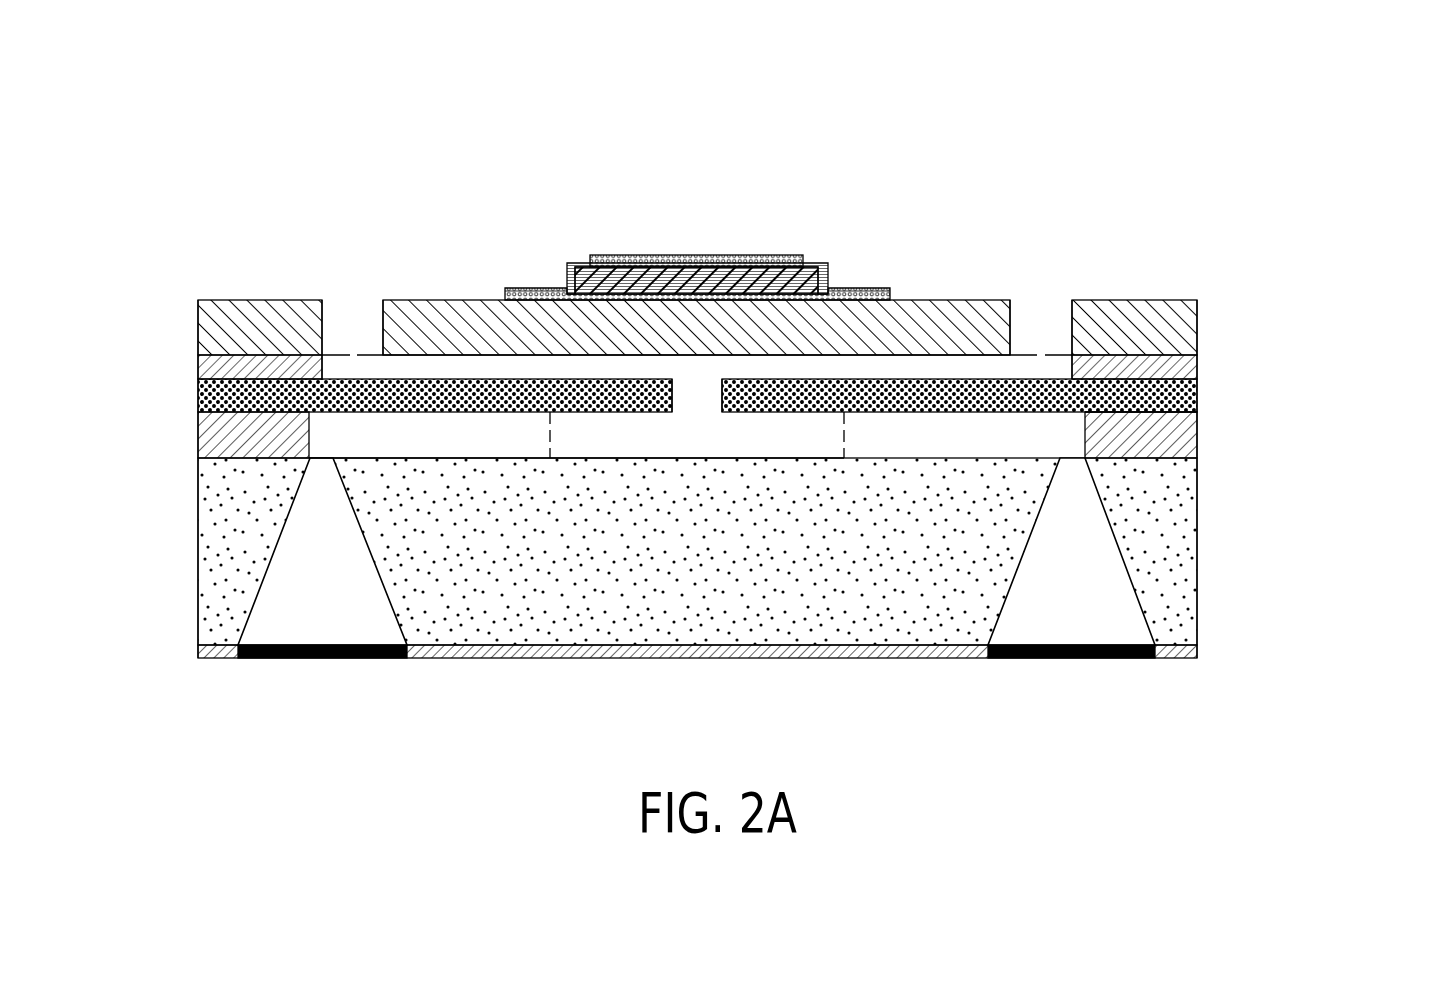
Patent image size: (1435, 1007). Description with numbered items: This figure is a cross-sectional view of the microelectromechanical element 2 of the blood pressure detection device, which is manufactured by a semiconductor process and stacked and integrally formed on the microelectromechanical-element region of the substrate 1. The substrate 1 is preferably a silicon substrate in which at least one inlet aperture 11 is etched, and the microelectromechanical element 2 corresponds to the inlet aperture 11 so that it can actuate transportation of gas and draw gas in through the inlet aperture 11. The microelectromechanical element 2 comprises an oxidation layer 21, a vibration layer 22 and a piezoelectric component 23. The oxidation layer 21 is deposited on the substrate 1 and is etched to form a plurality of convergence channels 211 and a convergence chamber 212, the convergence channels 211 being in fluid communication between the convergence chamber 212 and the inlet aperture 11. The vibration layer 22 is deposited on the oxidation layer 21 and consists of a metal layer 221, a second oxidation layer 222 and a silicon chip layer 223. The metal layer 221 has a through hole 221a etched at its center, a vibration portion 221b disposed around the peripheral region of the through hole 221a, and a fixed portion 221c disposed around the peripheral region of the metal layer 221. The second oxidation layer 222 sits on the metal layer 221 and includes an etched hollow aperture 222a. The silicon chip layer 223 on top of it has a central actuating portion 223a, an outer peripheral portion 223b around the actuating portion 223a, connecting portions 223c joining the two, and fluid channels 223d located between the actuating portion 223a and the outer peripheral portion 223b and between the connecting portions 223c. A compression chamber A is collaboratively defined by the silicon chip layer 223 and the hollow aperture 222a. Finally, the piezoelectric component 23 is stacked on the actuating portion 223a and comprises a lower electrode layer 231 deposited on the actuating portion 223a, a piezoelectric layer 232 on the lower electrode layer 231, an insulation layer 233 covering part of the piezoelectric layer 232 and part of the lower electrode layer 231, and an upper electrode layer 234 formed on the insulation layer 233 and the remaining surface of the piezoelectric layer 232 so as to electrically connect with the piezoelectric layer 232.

The substrate 1 is at (1188, 554).
The inlet aperture 11 is at (315, 588).
The microelectromechanical element 2 is at (1381, 95).
The oxidation layer 21 is at (634, 587).
The convergence channels 211 is at (382, 438).
The convergence chamber 212 is at (603, 437).
The vibration layer 22 is at (1347, 218).
The metal layer 221 is at (766, 561).
The through hole 221a is at (698, 395).
The vibration portion 221b is at (820, 395).
The fixed portion 221c is at (1148, 410).
The second oxidation layer 222 is at (706, 358).
The hollow aperture 222a is at (205, 363).
The silicon chip layer 223 is at (765, 252).
The actuating portion 223a is at (933, 333).
The outer peripheral portion 223b is at (257, 327).
The connecting portions 223c is at (367, 300).
The fluid channels 223d is at (352, 323).
The piezoelectric component 23 is at (907, 168).
The lower electrode layer 231 is at (865, 287).
The piezoelectric layer 232 is at (830, 278).
The insulation layer 233 is at (808, 268).
The upper electrode layer 234 is at (682, 256).
The compression chamber A is at (512, 370).